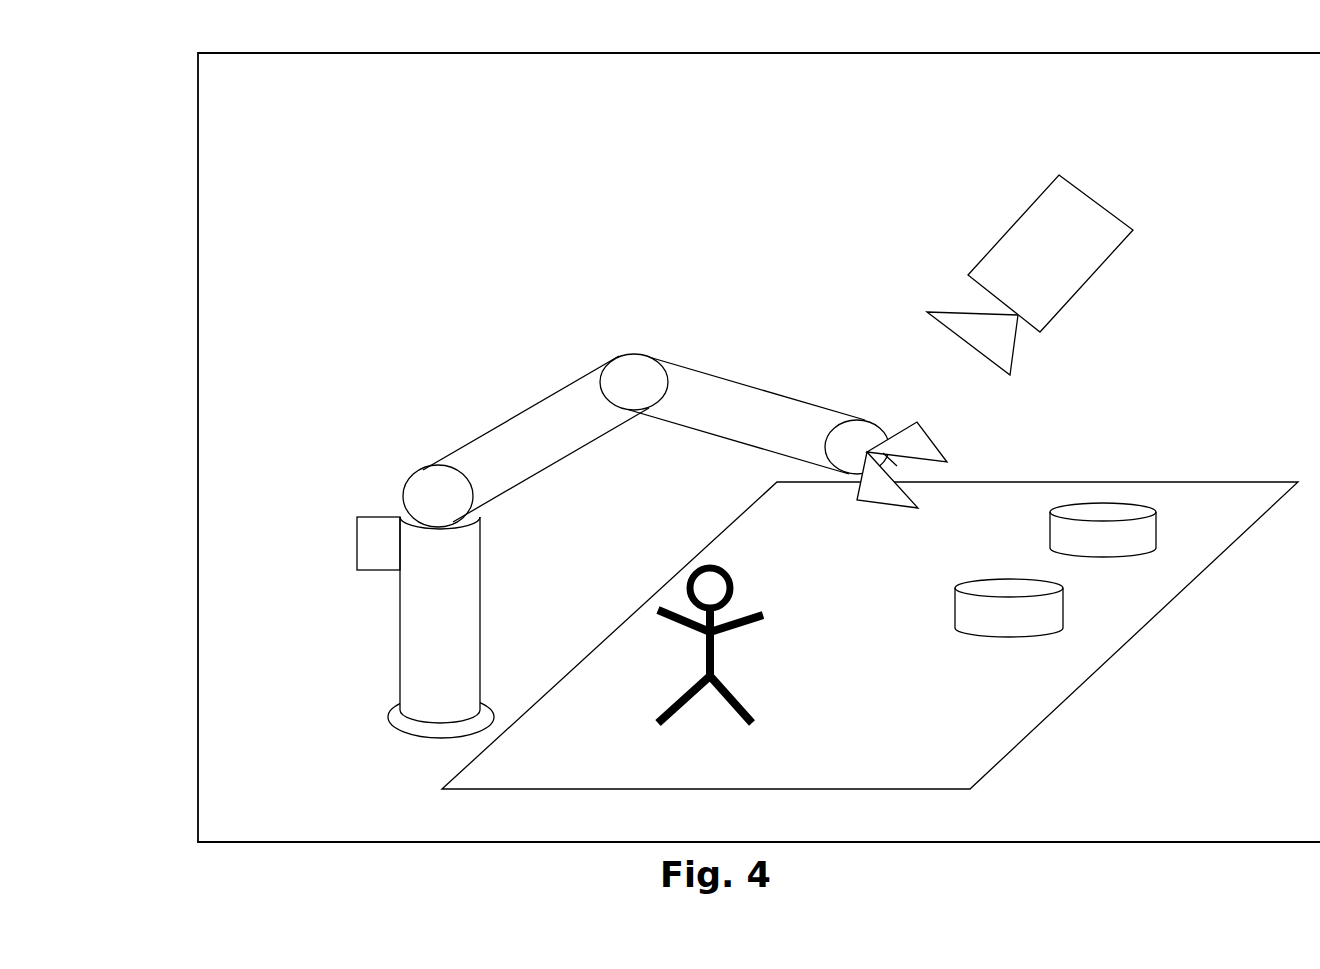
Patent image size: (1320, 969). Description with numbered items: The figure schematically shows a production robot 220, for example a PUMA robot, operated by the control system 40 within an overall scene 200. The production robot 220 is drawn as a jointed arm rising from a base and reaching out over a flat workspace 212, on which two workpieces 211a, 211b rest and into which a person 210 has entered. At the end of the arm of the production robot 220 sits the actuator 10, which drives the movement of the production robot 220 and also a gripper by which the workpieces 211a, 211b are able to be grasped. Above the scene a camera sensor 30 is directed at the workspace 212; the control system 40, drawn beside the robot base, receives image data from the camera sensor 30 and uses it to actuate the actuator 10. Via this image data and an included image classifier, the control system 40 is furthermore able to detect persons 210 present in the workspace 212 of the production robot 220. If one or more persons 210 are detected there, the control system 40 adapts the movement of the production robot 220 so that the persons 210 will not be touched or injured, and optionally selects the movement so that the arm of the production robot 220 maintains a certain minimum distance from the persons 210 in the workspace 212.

The actuator 10 is at (950, 455).
The camera sensor 30 is at (1127, 250).
The control system 40 is at (353, 535).
The workspace 200 is at (197, 770).
The persons 210 is at (748, 690).
The workpieces 211a is at (1068, 615).
The workpieces 211b is at (1158, 530).
The workspace 212 is at (1040, 723).
The production robot 220 is at (472, 423).